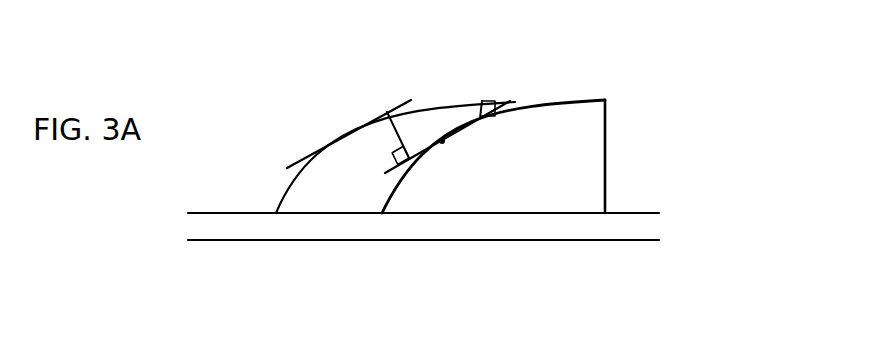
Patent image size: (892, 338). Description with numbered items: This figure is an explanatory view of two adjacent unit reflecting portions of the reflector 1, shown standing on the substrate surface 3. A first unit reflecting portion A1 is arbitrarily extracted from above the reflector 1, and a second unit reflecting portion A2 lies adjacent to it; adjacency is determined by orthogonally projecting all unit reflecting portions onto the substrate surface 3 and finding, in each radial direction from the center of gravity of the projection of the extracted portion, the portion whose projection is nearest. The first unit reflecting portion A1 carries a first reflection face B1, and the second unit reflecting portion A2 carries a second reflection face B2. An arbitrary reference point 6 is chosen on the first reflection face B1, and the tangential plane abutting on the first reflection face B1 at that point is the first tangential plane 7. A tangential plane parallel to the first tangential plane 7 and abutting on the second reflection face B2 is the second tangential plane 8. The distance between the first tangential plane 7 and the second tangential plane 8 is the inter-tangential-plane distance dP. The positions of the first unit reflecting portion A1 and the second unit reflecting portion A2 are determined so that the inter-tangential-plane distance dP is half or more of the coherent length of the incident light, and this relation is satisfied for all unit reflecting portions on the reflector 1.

The reflector 1 is at (588, 28).
The substrate surface 3 is at (638, 213).
The reference point 6 is at (445, 143).
The first tangential plane 7 is at (482, 101).
The second tangential plane 8 is at (360, 127).
The inter-tangential-plane distance dP is at (400, 124).
The first reflection face B1 is at (541, 109).
The second reflection face B2 is at (288, 184).
The first unit reflecting portion A1 is at (533, 200).
The second unit reflecting portion A2 is at (332, 193).